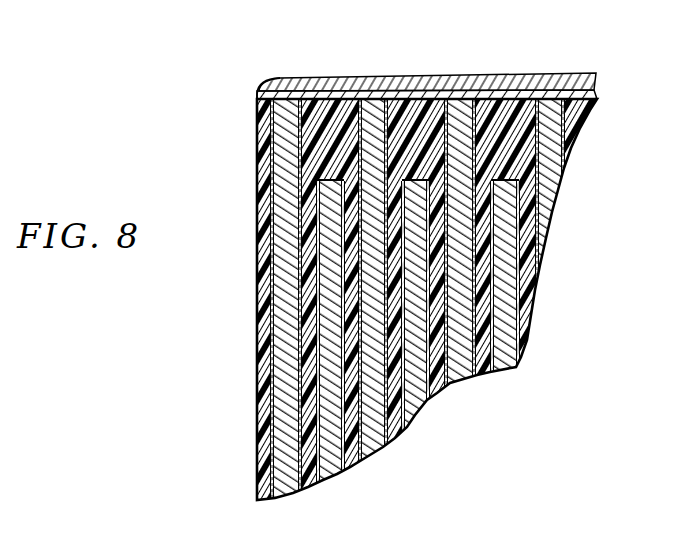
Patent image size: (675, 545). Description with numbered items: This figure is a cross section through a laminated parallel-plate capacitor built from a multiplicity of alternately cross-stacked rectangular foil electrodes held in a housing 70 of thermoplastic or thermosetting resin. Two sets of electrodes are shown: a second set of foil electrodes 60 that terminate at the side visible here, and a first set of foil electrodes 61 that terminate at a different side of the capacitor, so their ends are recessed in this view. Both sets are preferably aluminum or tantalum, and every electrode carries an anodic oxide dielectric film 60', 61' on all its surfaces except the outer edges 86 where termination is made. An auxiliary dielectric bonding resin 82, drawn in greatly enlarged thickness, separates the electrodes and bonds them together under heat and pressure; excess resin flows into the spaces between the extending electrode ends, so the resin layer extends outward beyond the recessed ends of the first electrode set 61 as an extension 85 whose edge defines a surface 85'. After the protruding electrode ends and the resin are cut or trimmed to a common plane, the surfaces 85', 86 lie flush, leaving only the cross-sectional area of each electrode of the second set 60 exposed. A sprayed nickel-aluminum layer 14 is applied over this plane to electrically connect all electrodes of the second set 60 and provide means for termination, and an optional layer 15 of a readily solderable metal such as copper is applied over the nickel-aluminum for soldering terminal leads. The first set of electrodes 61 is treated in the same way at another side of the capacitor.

The nickel-aluminum sprayed layer 14 is at (432, 88).
The copper layer 15 is at (483, 80).
The second set of foil electrodes 60 is at (408, 304).
The anodic oxide dielectric film 60' is at (419, 304).
The first set of foil electrodes 61 is at (436, 353).
The anodic oxide dielectric film 61' is at (403, 345).
The housing 70 is at (257, 310).
The dielectric bonding resin 82 is at (307, 302).
The resin extension 85 is at (429, 98).
The surface of extension 85' is at (427, 77).
The outer edges of electrodes 86 is at (287, 92).